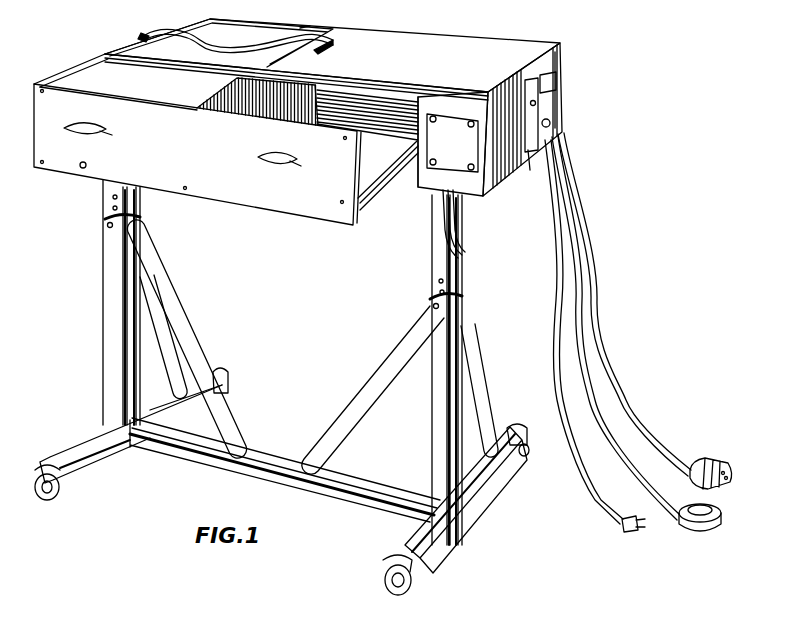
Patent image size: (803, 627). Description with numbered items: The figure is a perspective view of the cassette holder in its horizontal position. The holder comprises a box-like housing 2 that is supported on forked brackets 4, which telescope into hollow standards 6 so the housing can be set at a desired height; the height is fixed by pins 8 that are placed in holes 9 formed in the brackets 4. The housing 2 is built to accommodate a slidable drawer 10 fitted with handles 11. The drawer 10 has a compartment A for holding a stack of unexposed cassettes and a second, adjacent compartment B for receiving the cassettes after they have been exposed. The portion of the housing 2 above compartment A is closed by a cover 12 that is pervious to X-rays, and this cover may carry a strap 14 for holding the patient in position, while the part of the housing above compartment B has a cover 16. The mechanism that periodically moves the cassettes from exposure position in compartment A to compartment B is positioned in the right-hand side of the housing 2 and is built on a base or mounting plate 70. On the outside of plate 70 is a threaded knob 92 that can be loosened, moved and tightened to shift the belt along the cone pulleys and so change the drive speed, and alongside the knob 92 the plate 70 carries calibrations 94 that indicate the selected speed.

The housing 2 is at (579, 79).
The forked brackets 4 is at (455, 210).
The hollow standards 6 is at (110, 311).
The pins 8 is at (108, 225).
The holes 9 is at (113, 208).
The slidable drawer 10 is at (233, 190).
The handles 11 is at (84, 132).
The cover 12 is at (302, 31).
The strap 14 is at (150, 35).
The cover 16 is at (516, 44).
The base or mounting plate 70 is at (509, 178).
The knob 92 is at (540, 103).
The calibrations 94 is at (534, 148).
The compartment A is at (90, 69).
The compartment B is at (380, 183).